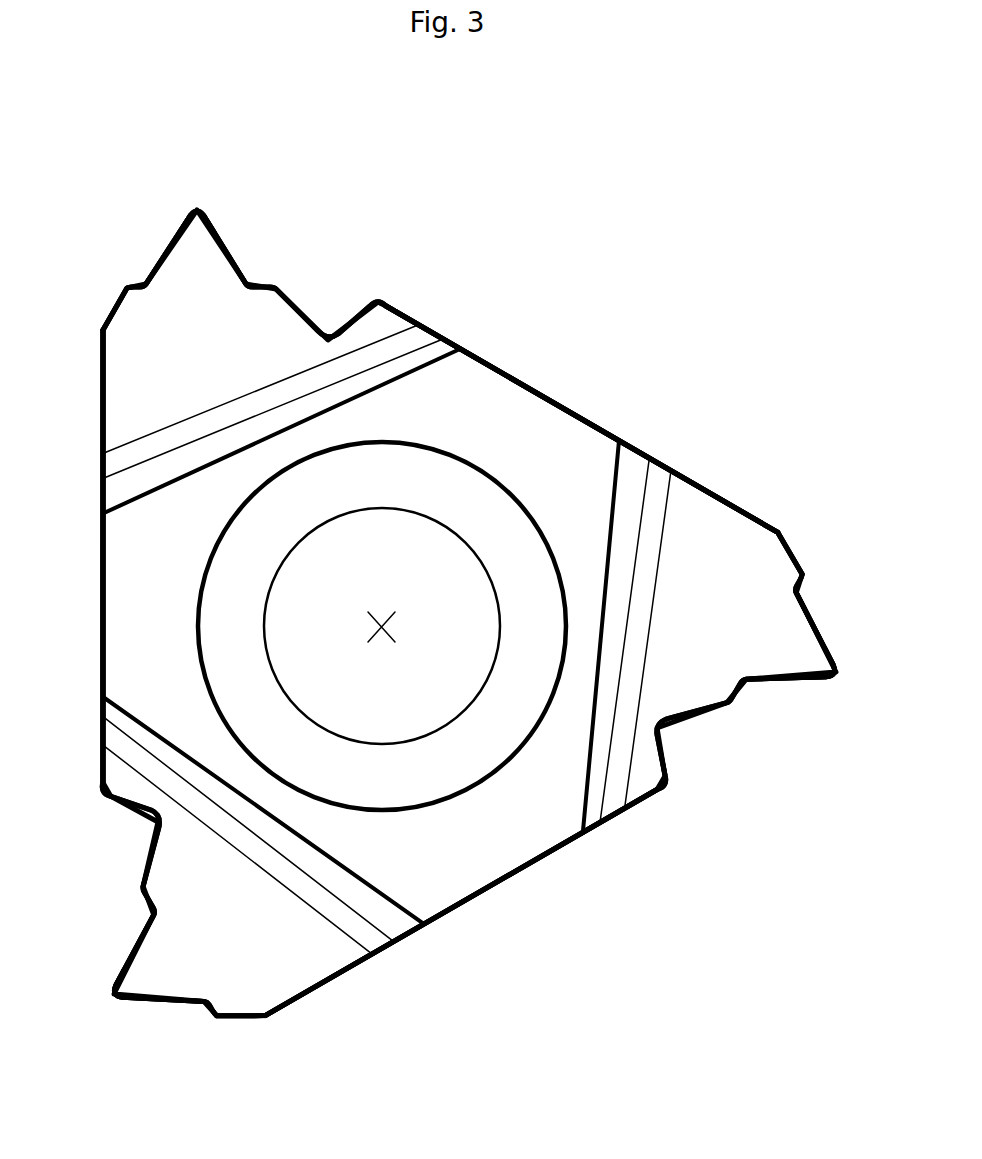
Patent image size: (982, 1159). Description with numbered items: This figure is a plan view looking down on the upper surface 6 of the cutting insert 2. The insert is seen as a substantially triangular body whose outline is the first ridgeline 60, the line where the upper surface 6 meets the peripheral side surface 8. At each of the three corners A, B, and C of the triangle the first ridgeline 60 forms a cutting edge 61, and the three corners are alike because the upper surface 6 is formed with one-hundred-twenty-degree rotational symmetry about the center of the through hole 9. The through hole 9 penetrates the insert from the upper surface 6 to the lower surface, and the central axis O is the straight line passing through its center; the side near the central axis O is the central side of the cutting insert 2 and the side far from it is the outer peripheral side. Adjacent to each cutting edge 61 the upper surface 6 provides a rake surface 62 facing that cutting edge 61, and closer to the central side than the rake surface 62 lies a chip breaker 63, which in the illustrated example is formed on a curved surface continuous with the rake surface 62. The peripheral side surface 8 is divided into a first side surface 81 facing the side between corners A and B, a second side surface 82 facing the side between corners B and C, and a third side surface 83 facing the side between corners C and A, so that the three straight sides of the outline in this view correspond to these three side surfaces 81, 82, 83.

The cutting insert 2 is at (497, 1120).
The upper surface 6 is at (520, 433).
The first ridgeline 60 is at (573, 407).
The cutting edge 61 is at (198, 211).
The rake surface 62 is at (208, 262).
The chip breaker 63 is at (380, 345).
The peripheral side surface 8 is at (440, 661).
The first side surface 81 is at (627, 443).
The second side surface 82 is at (520, 870).
The third side surface 83 is at (103, 578).
The through hole 9 is at (482, 675).
The central axis O is at (385, 613).
The corner A is at (167, 243).
The corner B is at (823, 627).
The corner C is at (150, 1002).